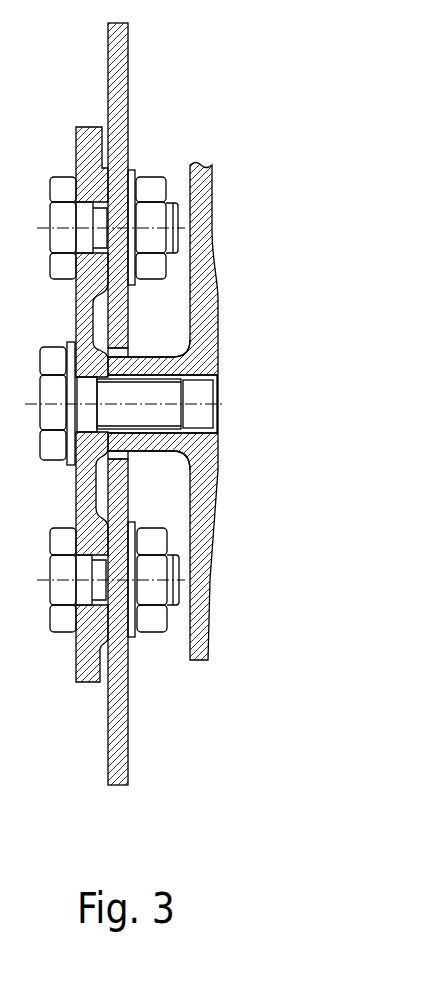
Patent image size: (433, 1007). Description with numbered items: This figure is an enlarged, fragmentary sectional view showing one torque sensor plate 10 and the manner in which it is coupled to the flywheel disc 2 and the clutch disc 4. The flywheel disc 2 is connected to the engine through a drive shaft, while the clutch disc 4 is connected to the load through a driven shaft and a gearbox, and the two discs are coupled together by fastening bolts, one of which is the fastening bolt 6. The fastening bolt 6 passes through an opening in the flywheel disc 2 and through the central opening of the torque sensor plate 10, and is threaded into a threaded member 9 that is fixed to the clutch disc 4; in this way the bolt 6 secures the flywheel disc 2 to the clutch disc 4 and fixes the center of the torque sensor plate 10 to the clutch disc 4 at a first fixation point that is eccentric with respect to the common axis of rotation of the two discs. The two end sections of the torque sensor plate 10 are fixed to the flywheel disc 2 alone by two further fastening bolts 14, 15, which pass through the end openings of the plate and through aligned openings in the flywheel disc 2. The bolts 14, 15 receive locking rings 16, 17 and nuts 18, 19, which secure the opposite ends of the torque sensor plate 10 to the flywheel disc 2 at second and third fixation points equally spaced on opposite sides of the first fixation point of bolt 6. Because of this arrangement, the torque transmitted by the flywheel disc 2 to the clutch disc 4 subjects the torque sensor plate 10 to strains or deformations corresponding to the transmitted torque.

The flywheel disc 2 is at (117, 785).
The clutch disc 4 is at (200, 655).
The fastening bolt 6 is at (38, 413).
The threaded member 9 is at (150, 356).
The torque sensor plate 10 is at (86, 677).
The fastening bolt 14 is at (48, 226).
The fastening bolt 15 is at (50, 585).
The locking ring 16 is at (132, 170).
The locking ring 17 is at (130, 640).
The nut 18 is at (157, 183).
The nut 19 is at (147, 623).